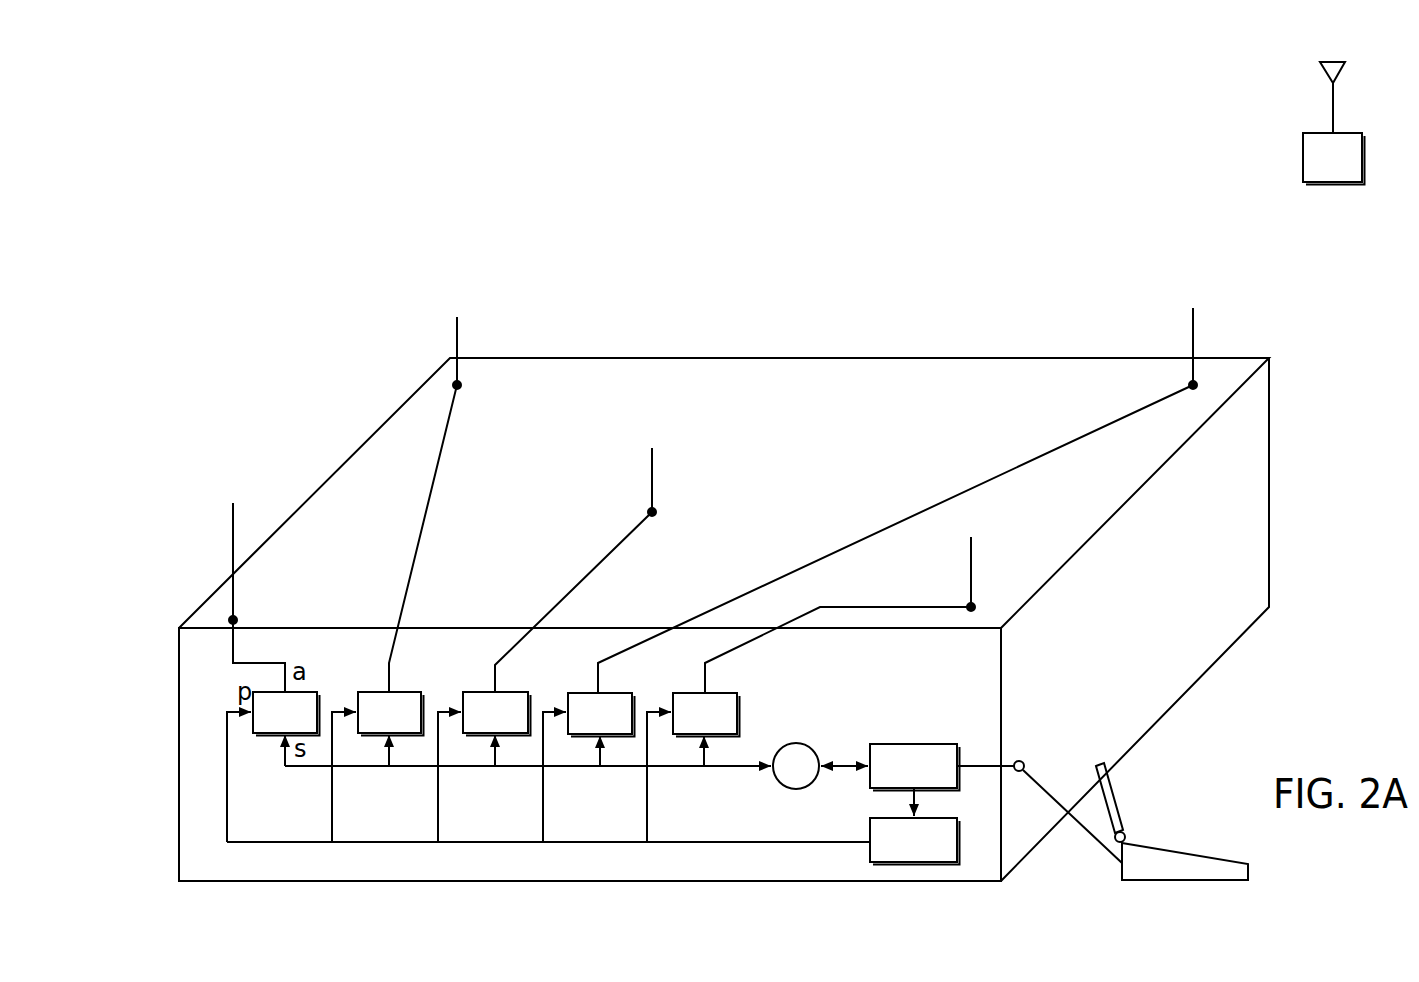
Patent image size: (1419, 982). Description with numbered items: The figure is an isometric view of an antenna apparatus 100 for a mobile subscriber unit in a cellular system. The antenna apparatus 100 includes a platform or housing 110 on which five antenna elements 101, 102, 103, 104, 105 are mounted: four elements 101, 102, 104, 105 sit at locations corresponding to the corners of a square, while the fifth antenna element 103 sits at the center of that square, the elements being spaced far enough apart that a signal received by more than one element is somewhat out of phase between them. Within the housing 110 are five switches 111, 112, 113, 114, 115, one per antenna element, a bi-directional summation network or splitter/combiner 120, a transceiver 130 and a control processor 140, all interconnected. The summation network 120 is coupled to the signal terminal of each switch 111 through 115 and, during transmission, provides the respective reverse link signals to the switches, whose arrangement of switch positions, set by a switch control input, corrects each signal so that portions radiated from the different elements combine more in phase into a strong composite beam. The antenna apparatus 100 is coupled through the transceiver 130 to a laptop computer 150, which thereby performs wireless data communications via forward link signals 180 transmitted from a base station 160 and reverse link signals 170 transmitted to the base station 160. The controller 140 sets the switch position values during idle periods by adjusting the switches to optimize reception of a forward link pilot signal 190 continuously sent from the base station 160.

The antenna apparatus 100 is at (363, 348).
The antenna element 101 is at (458, 334).
The antenna element 102 is at (1195, 331).
The antenna element 103 is at (653, 478).
The antenna element 104 is at (232, 529).
The antenna element 105 is at (972, 566).
The housing 110 is at (740, 882).
The switch 111 is at (303, 725).
The switch 112 is at (408, 725).
The switch 113 is at (514, 725).
The switch 114 is at (618, 726).
The switch 115 is at (723, 726).
The summation network 120 is at (807, 740).
The transceiver 130 is at (932, 779).
The control processor 140 is at (932, 853).
The laptop computer 150 is at (1172, 879).
The base station 160 is at (1351, 170).
The reverse link signals 170 is at (258, 405).
The forward link signals 180 is at (247, 490).
The forward link pilot signal 190 is at (1300, 72).